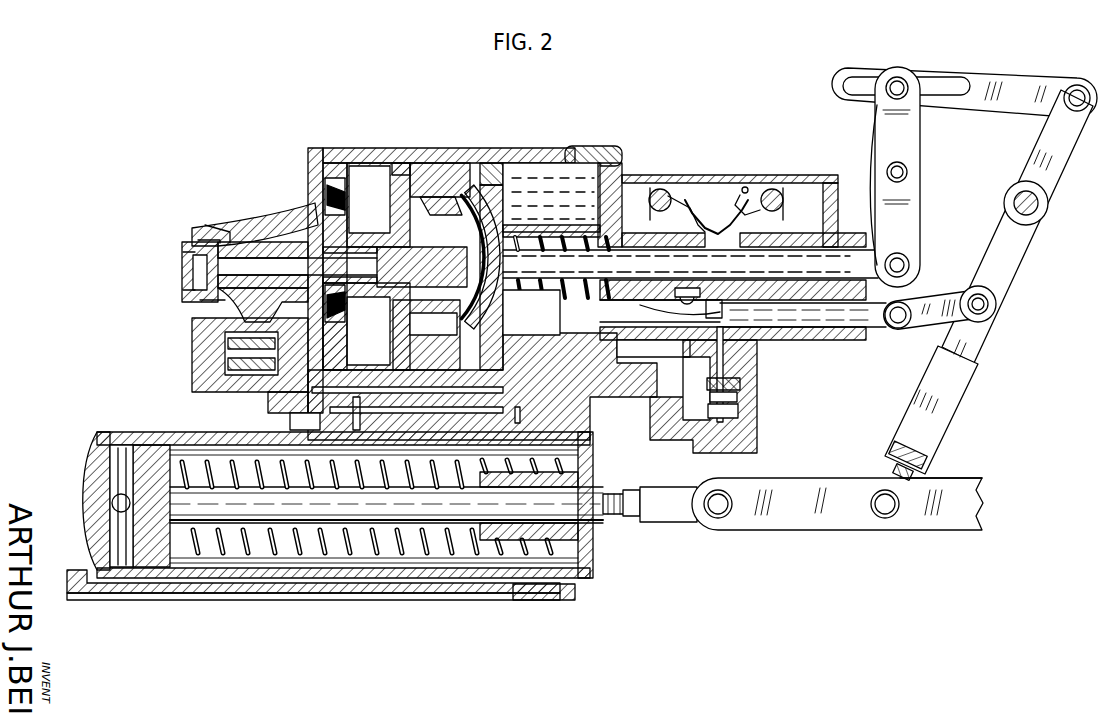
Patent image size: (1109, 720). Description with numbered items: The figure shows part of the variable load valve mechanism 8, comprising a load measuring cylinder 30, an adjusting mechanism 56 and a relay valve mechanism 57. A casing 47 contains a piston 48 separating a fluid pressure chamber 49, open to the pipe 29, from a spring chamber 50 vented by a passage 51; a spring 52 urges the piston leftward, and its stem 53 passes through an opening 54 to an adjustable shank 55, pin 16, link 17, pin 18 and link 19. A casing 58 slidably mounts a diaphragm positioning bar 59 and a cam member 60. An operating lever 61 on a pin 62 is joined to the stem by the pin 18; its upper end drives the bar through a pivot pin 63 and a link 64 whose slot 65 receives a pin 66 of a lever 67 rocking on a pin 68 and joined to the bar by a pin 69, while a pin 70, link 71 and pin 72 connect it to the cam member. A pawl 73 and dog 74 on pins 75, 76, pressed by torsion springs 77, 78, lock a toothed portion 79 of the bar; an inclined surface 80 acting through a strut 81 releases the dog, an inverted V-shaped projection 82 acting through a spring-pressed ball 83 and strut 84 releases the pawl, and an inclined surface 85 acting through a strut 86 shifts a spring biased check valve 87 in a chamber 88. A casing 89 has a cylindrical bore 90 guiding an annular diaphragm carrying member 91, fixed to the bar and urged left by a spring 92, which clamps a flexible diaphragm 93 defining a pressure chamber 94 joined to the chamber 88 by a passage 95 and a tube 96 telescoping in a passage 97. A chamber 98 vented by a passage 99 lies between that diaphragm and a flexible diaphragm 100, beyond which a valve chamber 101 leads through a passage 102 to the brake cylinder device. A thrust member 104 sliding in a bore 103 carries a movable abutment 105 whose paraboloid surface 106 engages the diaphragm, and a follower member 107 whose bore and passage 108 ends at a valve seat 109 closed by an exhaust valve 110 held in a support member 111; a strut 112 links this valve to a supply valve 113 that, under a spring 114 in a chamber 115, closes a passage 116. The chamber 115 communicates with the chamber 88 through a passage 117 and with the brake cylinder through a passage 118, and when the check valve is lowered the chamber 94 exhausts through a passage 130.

The variable load valve mechanism 8 is at (597, 146).
The pivotal pin 16 is at (718, 518).
The link 17 is at (820, 510).
The pin 18 is at (882, 518).
The link 19 is at (950, 510).
The pipe 29 is at (92, 472).
The load measuring cylinder 30 is at (226, 600).
The casing 47 is at (435, 582).
The piston 48 is at (152, 570).
The fluid pressure chamber 49 is at (122, 572).
The spring chamber 50 is at (320, 560).
The passage 51 is at (590, 556).
The spring 52 is at (372, 578).
The stem 53 is at (462, 525).
The opening 54 is at (512, 540).
The adjustable shank 55 is at (700, 522).
The adjusting mechanism 56 is at (708, 175).
The relay valve mechanism 57 is at (465, 150).
The casing 58 is at (829, 183).
The diaphragm positioning bar 59 is at (553, 240).
The cam member 60 is at (818, 342).
The operating lever 61 is at (962, 380).
The pin 62 is at (1040, 208).
The pivot pin 63 is at (1074, 86).
The link 64 is at (1025, 85).
The slot 65 is at (937, 90).
The pin 66 is at (892, 84).
The lever 67 is at (905, 133).
The pin 68 is at (910, 172).
The pin 69 is at (912, 265).
The pin 70 is at (988, 307).
The link 71 is at (930, 318).
The pin 72 is at (892, 328).
The pawl 73 is at (700, 212).
The dog 74 is at (742, 200).
The pin 75 is at (655, 190).
The pin 76 is at (775, 190).
The torsion spring 77 is at (680, 200).
The torsion spring 78 is at (748, 188).
The toothed portion 79 is at (712, 300).
The inclined surface 80 is at (752, 345).
The strut 81 is at (748, 313).
The inverted V-shaped projection 82 is at (575, 332).
The spring-pressed ball 83 is at (655, 282).
The strut 84 is at (690, 228).
The inclined surface 85 is at (700, 292).
The strut 86 is at (768, 365).
The spring biased check valve 87 is at (740, 397).
The chamber 88 is at (740, 414).
The casing 89 is at (392, 165).
The cylindrical bore 90 is at (540, 163).
The annular diaphragm carrying member 91 is at (488, 163).
The spring 92 is at (590, 240).
The flexible diaphragm 93 is at (515, 227).
The pressure chamber 94 is at (445, 163).
The passage 95 is at (522, 345).
The tube 96 is at (585, 400).
The passage 97 is at (652, 398).
The chamber 98 is at (316, 168).
The passage 99 is at (358, 185).
The flexible diaphragm 100 is at (330, 195).
The valve chamber 101 is at (328, 210).
The passage 102 is at (570, 600).
The bore 103 is at (400, 162).
The thrust member 104 is at (372, 248).
The movable abutment 105 is at (412, 335).
The surface 106 is at (415, 318).
The follower member 107 is at (295, 228).
The bore and passage 108 is at (240, 248).
The valve seat 109 is at (232, 325).
The exhaust valve 110 is at (195, 322).
The support member 111 is at (215, 232).
The strut 112 is at (200, 285).
The supply valve 113 is at (183, 268).
The spring 114 is at (188, 251).
The chamber 115 is at (200, 243).
The passage 116 is at (225, 292).
The passage 117 is at (285, 402).
The passage 118 is at (340, 418).
The passage 130 is at (740, 392).